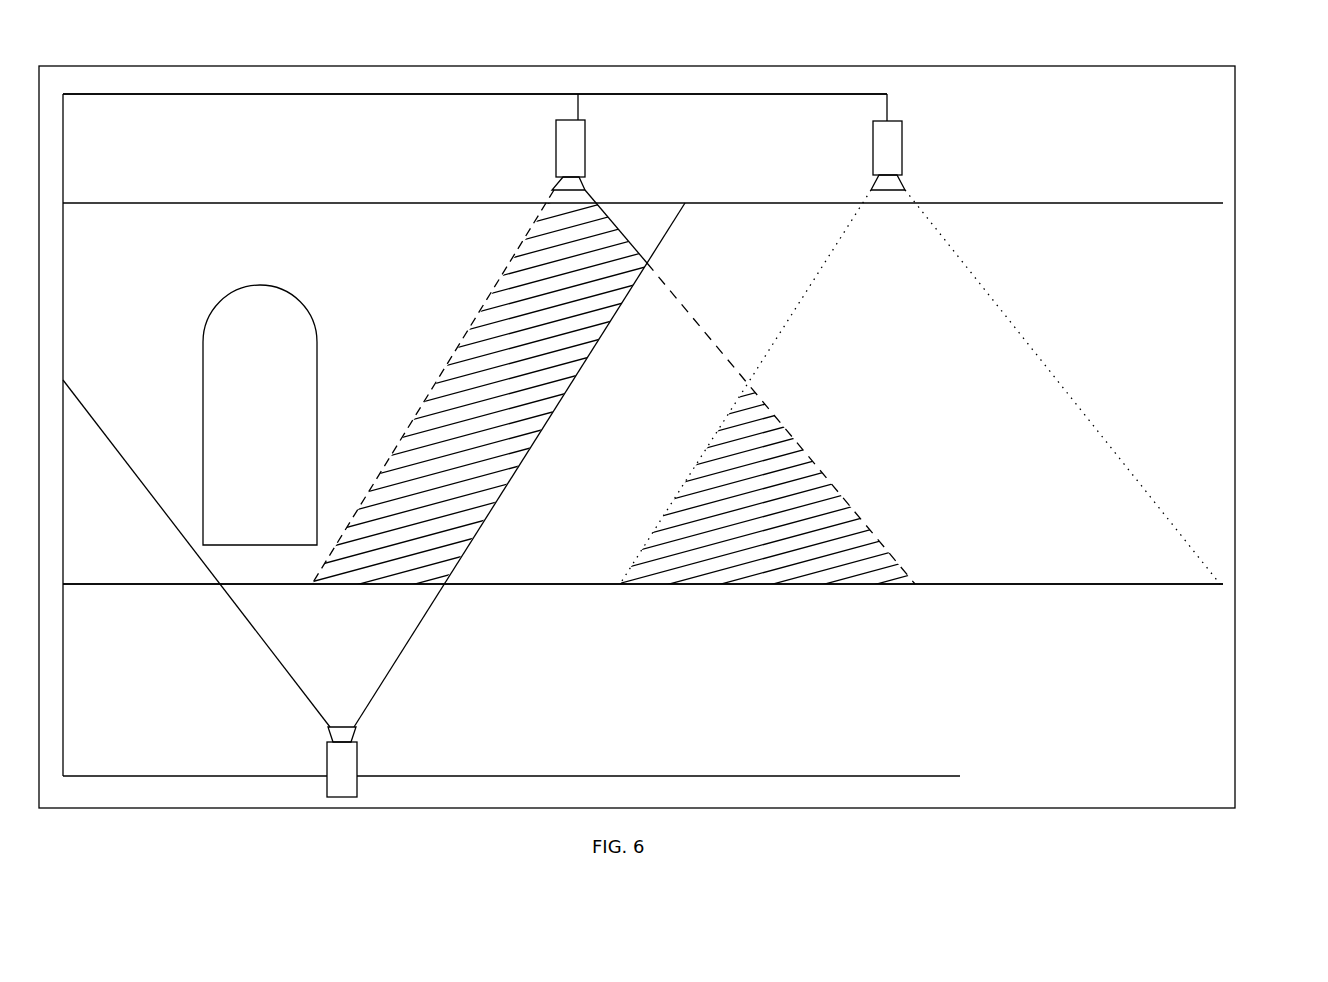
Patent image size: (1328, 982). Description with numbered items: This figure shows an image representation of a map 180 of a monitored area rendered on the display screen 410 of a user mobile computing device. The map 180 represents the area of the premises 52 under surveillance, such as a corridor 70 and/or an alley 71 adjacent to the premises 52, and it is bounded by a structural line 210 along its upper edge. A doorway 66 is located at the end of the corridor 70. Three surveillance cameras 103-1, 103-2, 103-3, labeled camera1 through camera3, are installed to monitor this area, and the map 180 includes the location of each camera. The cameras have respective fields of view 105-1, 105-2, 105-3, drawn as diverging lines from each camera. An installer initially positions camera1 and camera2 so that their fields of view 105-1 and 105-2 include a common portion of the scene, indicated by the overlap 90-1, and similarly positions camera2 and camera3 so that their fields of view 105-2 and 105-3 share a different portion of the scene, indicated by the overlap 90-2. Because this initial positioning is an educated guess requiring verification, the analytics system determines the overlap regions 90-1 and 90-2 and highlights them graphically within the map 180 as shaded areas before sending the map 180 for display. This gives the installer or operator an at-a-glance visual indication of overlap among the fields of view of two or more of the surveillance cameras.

The map 180 is at (1205, 153).
The display screen 410 is at (1235, 452).
The ceiling 210 is at (95, 94).
The premises 52 is at (1107, 203).
The corridor 70 is at (1125, 361).
The alley 71 is at (1126, 333).
The doorway 66 is at (317, 362).
The surveillance camera 103-1 is at (327, 762).
The surveillance camera 103-2 is at (585, 148).
The surveillance camera 103-3 is at (902, 135).
The field of view 105-1 is at (420, 622).
The field of view 105-2 is at (683, 303).
The field of view 105-3 is at (967, 260).
The overlap 90-1 is at (525, 298).
The overlap 90-2 is at (788, 483).